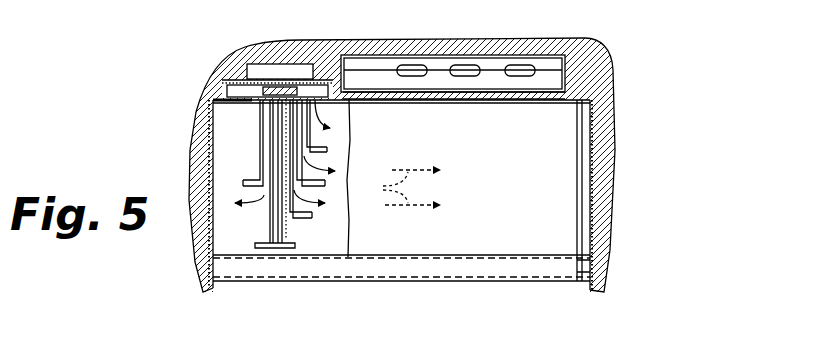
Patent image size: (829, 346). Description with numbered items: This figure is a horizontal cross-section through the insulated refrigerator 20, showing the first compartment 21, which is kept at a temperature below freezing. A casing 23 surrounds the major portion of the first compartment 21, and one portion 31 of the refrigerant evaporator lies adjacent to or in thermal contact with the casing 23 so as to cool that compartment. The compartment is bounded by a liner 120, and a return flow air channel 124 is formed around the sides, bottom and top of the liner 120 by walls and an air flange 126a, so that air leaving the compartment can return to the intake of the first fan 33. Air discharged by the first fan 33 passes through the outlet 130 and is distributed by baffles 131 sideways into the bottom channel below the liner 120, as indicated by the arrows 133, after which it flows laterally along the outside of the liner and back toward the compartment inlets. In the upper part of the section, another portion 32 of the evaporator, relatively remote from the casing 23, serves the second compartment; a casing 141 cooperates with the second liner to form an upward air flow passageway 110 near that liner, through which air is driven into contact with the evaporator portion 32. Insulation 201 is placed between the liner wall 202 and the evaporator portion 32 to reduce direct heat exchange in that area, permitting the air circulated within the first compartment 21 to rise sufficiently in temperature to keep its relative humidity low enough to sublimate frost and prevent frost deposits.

The insulated refrigerator 20 is at (613, 100).
The first compartment 21 is at (494, 175).
The casing 23 is at (197, 113).
The evaporator portion 31 is at (207, 237).
The evaporator portion 32 is at (527, 67).
The first fan 33 is at (272, 87).
The upward air flow passageway 110 is at (430, 66).
The casing 141 is at (495, 58).
The liner 120 is at (472, 245).
The return flow air channel 124 is at (320, 268).
The air flange 126a is at (255, 283).
The fan outlet 130 is at (318, 100).
The baffles 131 is at (260, 148).
The arrows 133 is at (266, 192).
The insulation 201 is at (539, 101).
The liner wall 202 is at (481, 101).